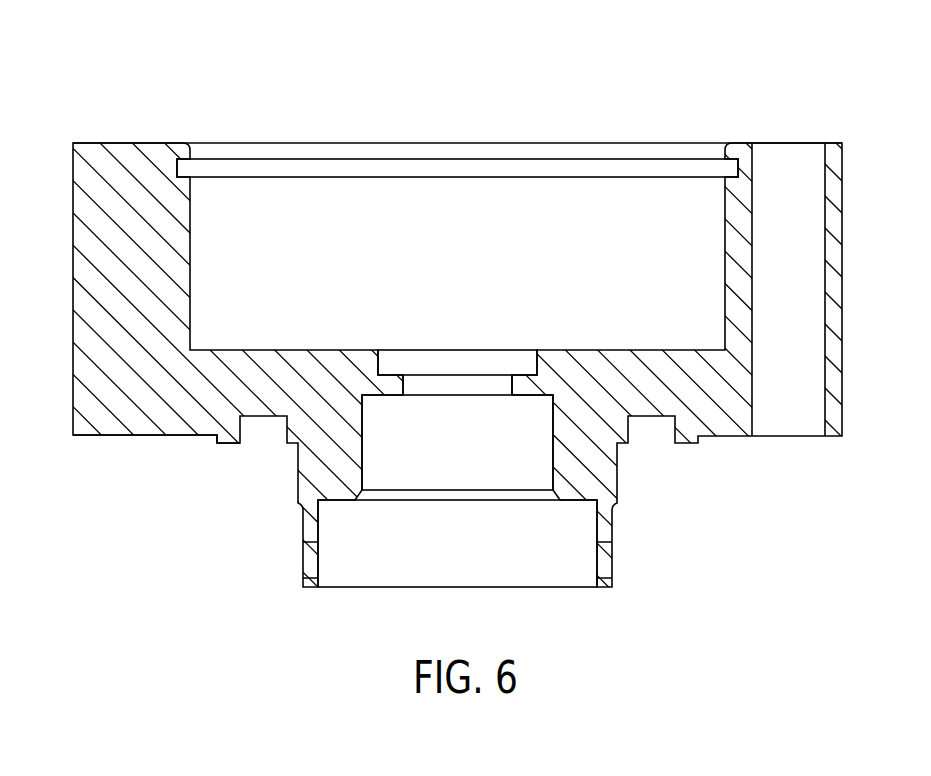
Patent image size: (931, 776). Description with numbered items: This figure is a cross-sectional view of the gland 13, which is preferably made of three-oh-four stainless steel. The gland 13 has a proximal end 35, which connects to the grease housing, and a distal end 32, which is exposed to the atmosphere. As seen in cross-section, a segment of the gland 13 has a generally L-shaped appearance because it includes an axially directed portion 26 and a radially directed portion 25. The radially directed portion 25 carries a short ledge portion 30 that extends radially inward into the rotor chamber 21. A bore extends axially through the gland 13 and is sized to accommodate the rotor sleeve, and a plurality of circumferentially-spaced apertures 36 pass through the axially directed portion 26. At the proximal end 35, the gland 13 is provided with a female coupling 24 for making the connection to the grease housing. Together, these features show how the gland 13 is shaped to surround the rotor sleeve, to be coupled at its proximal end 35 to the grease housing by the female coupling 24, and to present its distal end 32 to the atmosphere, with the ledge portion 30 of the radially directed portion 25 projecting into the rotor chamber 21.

The gland 13 is at (465, 325).
The rotor chamber 21 is at (470, 383).
The female coupling 24 is at (312, 533).
The radially directed portion 25 is at (192, 415).
The axially directed portion 26 is at (83, 240).
The short ledge portion 30 is at (400, 415).
The distal end 32 is at (507, 195).
The proximal end 35 is at (462, 570).
The apertures 36 is at (785, 157).